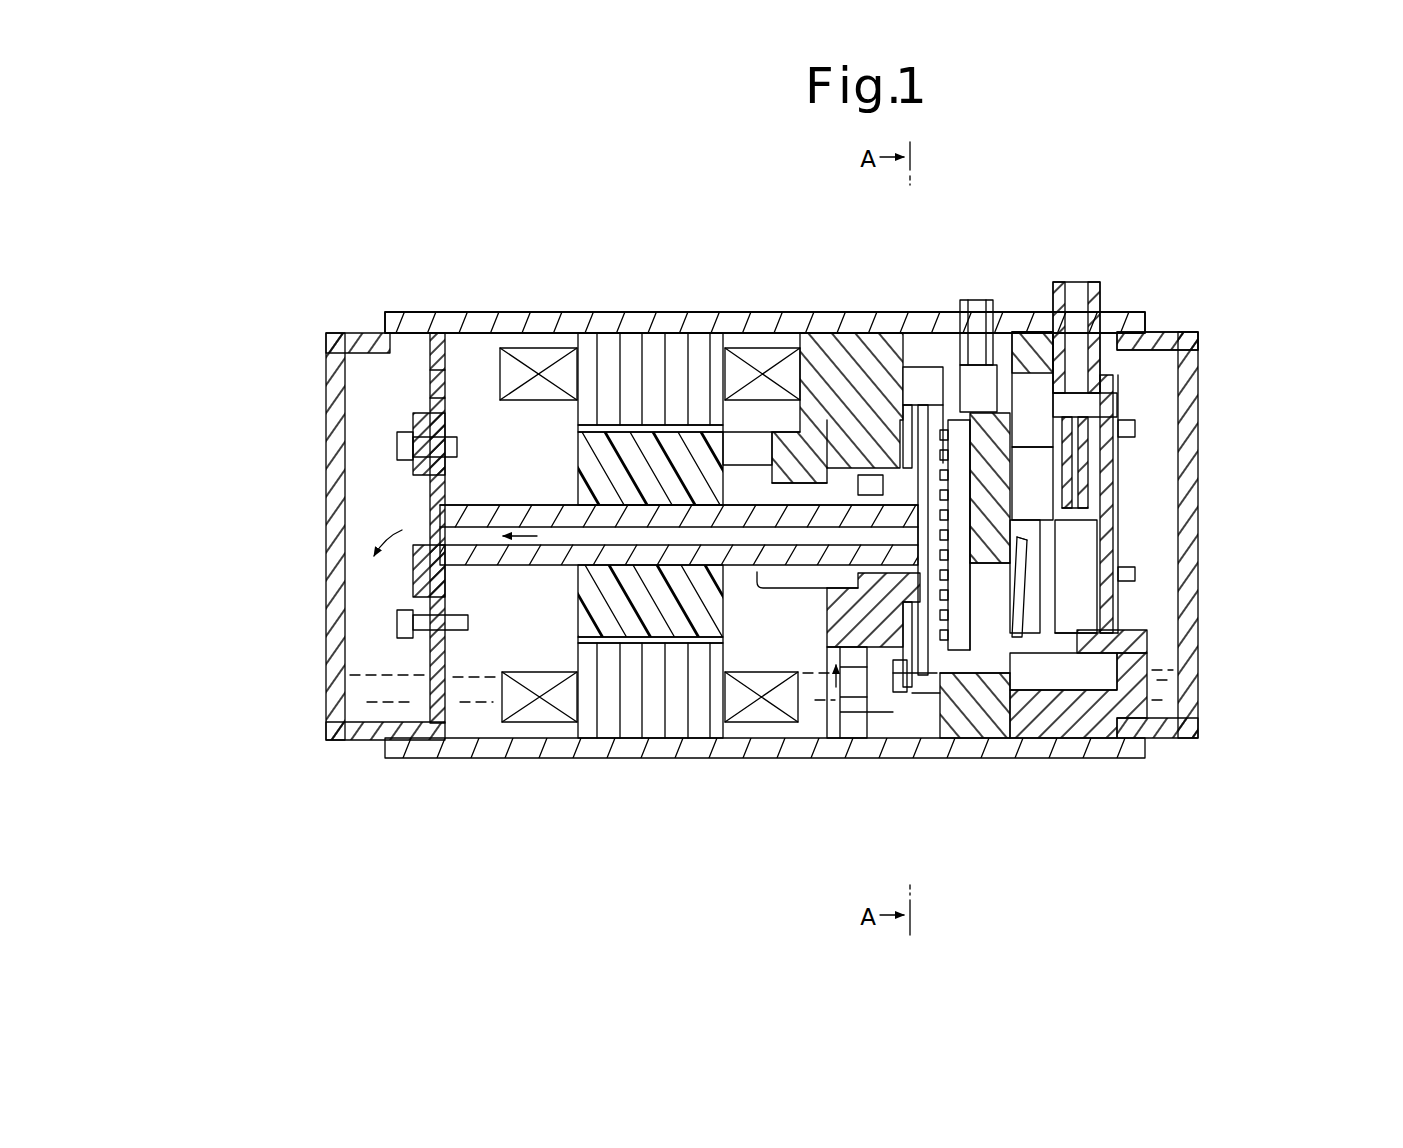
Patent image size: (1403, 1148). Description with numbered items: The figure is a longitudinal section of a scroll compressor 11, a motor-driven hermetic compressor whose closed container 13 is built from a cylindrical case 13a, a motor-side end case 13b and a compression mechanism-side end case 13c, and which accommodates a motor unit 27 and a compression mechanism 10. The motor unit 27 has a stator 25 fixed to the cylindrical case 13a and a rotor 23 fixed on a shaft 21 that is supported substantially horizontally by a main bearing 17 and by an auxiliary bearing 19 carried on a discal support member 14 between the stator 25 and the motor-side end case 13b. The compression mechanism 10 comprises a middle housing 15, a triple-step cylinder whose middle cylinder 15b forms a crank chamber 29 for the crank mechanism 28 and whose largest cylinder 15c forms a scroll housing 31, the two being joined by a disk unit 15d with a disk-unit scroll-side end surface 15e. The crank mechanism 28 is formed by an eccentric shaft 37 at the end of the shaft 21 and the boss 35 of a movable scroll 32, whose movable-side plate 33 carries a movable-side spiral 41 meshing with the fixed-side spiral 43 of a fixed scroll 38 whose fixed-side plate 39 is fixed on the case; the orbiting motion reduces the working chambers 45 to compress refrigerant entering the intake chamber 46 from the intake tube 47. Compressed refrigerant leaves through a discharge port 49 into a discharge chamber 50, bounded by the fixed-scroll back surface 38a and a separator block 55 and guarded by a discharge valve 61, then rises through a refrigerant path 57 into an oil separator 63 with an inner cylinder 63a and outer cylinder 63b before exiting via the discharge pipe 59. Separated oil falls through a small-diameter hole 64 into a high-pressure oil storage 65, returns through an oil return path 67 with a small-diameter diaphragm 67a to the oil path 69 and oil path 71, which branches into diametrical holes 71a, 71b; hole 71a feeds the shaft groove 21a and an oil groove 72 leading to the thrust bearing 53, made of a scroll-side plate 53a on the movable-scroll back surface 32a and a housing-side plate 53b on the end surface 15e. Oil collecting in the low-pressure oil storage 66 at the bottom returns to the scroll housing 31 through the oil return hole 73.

The compression mechanism 10 is at (1045, 330).
The scroll compressor 11 is at (558, 198).
The closed container 13 is at (430, 330).
The cylindrical case 13a is at (467, 312).
The motor-side end case 13b is at (326, 360).
The compression mechanism-side end case 13c is at (1198, 345).
The support member 14 is at (430, 392).
The middle housing 15 is at (858, 625).
The middle cylinder 15b is at (870, 575).
The cylinder 15c is at (930, 700).
The disk unit 15d is at (903, 700).
The disk-unit scroll-side end surface 15e is at (908, 680).
The main bearing 17 is at (770, 590).
The auxiliary bearing 19 is at (470, 506).
The shaft 21 is at (540, 565).
The shaft groove 21a is at (810, 520).
The rotor 23 is at (592, 482).
The stator 25 is at (610, 353).
The motor unit 27 is at (592, 380).
The crank mechanism 28 is at (790, 440).
The crank chamber 29 is at (1050, 600).
The scroll housing 31 is at (950, 570).
The movable scroll 32 is at (970, 230).
The movable-scroll back surface 32a is at (905, 400).
The movable-side plate 33 is at (912, 400).
The boss 35 is at (815, 470).
The eccentric shaft 37 is at (775, 480).
The fixed scroll 38 is at (1031, 346).
The fixed-scroll back surface 38a is at (1040, 520).
The fixed-side plate 39 is at (1100, 610).
The movable-side spiral 41 is at (948, 420).
The fixed-side spiral 43 is at (1005, 580).
The working chamber 45 is at (1118, 400).
The intake chamber 46 is at (1000, 420).
The intake tube 47 is at (977, 300).
The discharge port 49 is at (1045, 650).
The discharge chamber 50 is at (1045, 558).
The thrust bearing 53 is at (858, 230).
The scroll-side plate 53a is at (855, 370).
The housing-side plate 53b is at (808, 360).
The separator block 55 is at (1150, 332).
The refrigerant path 57 is at (1100, 440).
The discharge pipe 59 is at (1085, 290).
The discharge valve 61 is at (1055, 600).
The oil separator 63 is at (1318, 438).
The inner cylinder 63a is at (1088, 490).
The outer cylinder 63b is at (1072, 470).
The small-diameter hole 64 is at (1055, 652).
The high-pressure oil storage 65 is at (1115, 722).
The low-pressure oil storage 66 is at (365, 697).
The oil return path 67 is at (1022, 620).
The small-diameter diaphragm 67a is at (1012, 545).
The oil path 69 is at (950, 665).
The oil path 71 is at (644, 552).
The diametrical hole 71a is at (685, 332).
The diametrical hole 71b is at (483, 568).
The oil groove 72 is at (788, 497).
The oil return hole 73 is at (884, 700).